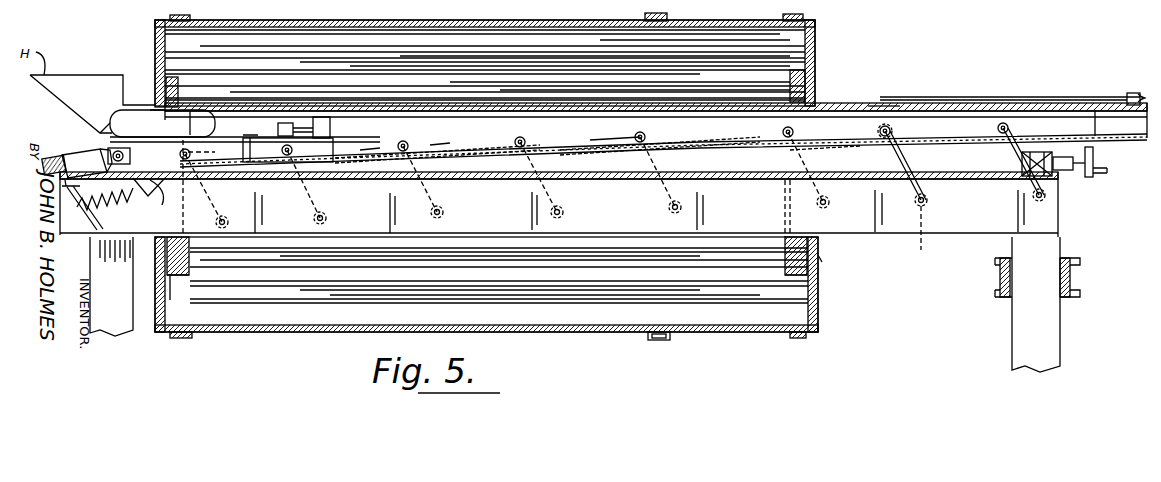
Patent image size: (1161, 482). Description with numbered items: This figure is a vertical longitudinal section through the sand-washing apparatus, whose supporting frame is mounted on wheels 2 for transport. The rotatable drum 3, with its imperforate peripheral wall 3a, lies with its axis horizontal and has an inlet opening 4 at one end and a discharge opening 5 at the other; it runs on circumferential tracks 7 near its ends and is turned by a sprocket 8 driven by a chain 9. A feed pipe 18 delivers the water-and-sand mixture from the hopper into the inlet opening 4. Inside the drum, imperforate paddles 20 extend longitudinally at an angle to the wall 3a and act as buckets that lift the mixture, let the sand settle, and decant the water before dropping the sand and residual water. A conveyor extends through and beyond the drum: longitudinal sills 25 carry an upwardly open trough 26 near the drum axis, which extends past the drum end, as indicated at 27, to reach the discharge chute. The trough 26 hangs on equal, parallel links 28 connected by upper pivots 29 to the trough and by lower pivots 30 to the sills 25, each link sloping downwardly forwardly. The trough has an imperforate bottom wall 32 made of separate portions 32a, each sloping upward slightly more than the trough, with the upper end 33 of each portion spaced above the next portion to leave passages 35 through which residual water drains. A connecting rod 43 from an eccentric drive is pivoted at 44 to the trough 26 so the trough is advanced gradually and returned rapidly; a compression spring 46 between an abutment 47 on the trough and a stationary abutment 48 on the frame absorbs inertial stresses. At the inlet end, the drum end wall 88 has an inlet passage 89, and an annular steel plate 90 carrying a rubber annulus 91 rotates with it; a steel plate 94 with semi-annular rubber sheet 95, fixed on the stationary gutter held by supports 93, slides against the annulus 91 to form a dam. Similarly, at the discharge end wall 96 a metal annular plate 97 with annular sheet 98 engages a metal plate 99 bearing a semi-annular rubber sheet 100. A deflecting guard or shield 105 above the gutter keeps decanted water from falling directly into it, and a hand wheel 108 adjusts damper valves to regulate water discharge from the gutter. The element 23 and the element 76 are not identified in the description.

The wheels 2 is at (64, 0).
The rotatable drum 3 is at (278, 16).
The imperforate peripheral wall 3a is at (482, 20).
The inlet opening 4 is at (155, 112).
The discharge opening 5 is at (822, 240).
The circumferential tracks 7 is at (190, 338).
The sprocket 8 is at (662, 13).
The chain 9 is at (650, 13).
The feed pipe 18 is at (196, 120).
The imperforate paddles 20 is at (353, 62).
The carriage bar 23 is at (800, 153).
The longitudinal sills 25 is at (985, 238).
The upwardly open trough 26 is at (878, 106).
The outward extension of trough 27 is at (1137, 97).
The links 28 is at (195, 152).
The upper pivots 29 is at (896, 132).
The lower pivots 30 is at (921, 250).
The imperforate bottom wall 32 is at (365, 150).
The imperforate bottom wall portions 32a is at (436, 143).
The upper end of bottom wall portion 33 is at (470, 150).
The passages 35 is at (560, 180).
The connecting rod 43 is at (78, 154).
The pivot connection 44 is at (113, 143).
The compression spring 46 is at (112, 203).
The abutment 47 is at (153, 200).
The stationary abutment 48 is at (80, 232).
The control rod 76 is at (990, 100).
The end wall 88 is at (160, 40).
The inlet passage 89 is at (128, 262).
The annular steel plate 90 is at (168, 88).
The rubber annulus 91 is at (165, 335).
The supports 93 is at (110, 335).
The steel plate 94 is at (190, 272).
The semi-annular rubber sheet 95 is at (186, 275).
The discharge end wall 96 is at (818, 53).
The metal annular plate 97 is at (818, 270).
The annular sheet 98 is at (820, 67).
The metal plate 99 is at (782, 240).
The semi-annular rubber sheet 100 is at (790, 276).
The deflecting guard or shield 105 is at (220, 185).
The hand wheel 108 is at (1082, 182).